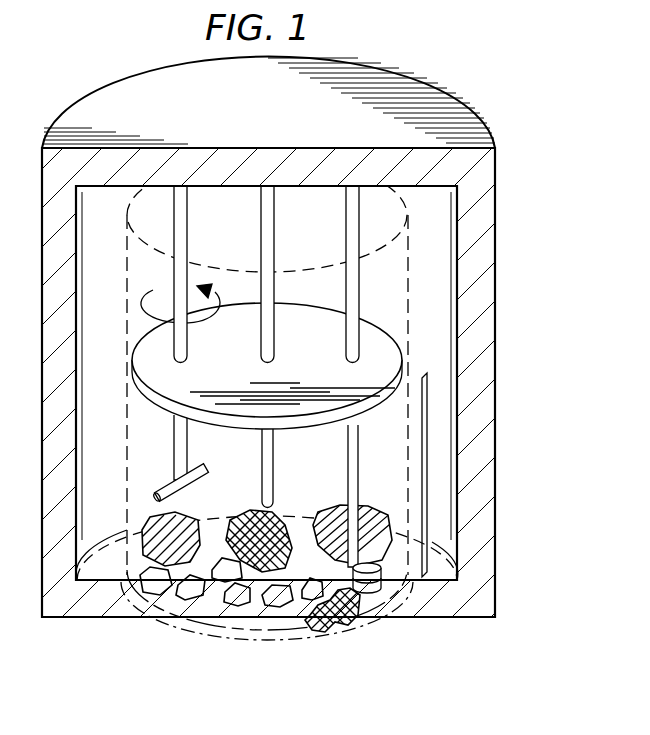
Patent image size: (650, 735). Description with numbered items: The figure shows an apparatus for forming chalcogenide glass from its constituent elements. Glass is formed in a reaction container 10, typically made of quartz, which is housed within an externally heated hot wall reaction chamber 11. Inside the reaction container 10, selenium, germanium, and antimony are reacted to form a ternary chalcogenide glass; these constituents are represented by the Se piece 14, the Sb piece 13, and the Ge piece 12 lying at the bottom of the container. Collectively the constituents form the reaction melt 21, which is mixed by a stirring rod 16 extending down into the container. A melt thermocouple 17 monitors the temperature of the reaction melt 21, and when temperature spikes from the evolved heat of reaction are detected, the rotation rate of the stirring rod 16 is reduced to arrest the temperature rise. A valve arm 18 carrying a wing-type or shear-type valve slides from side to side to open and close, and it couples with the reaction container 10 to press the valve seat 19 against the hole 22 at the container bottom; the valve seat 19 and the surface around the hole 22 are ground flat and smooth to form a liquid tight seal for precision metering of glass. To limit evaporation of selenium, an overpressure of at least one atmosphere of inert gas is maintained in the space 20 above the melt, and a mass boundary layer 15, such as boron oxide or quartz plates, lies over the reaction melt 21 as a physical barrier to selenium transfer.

The reaction container 10 is at (418, 247).
The hot wall reaction chamber 11 is at (112, 88).
The Ge piece 12 is at (250, 512).
The Sb piece 13 is at (150, 522).
The Se piece 14 is at (135, 592).
The mass boundary layer 15 is at (368, 335).
The stirring rod 16 is at (176, 447).
The melt thermocouple 17 is at (273, 478).
The valve arm 18 is at (348, 465).
The valve seat 19 is at (400, 605).
The space 20 is at (128, 283).
The reaction melt 21 is at (428, 475).
The hole 22 is at (372, 605).